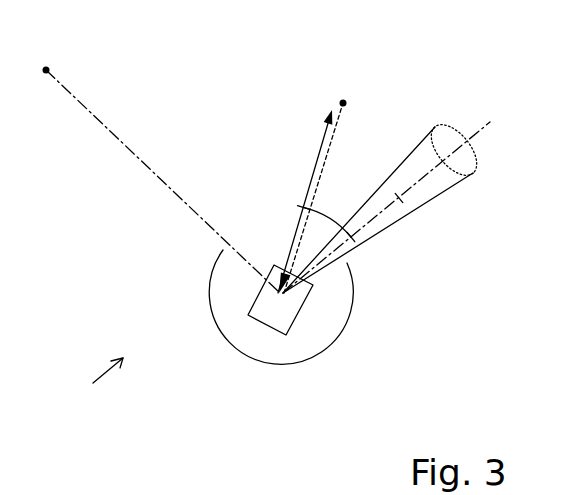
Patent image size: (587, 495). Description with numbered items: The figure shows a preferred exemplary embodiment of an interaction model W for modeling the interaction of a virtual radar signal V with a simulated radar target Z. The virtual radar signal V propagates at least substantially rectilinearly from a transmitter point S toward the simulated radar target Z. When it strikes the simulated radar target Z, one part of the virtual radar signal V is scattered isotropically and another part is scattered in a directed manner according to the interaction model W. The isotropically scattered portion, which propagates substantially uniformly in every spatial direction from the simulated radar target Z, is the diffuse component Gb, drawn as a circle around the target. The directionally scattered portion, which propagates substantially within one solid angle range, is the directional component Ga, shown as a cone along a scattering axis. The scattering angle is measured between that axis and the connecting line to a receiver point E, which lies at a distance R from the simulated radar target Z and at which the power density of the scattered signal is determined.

The transmitter point S is at (43, 57).
The virtual radar signal V is at (173, 195).
The distance R is at (300, 197).
The receiver point E is at (317, 183).
The directional component Ga is at (399, 198).
The diffuse component Gb is at (348, 325).
The simulated radar target Z is at (300, 314).
The interaction model W is at (92, 386).